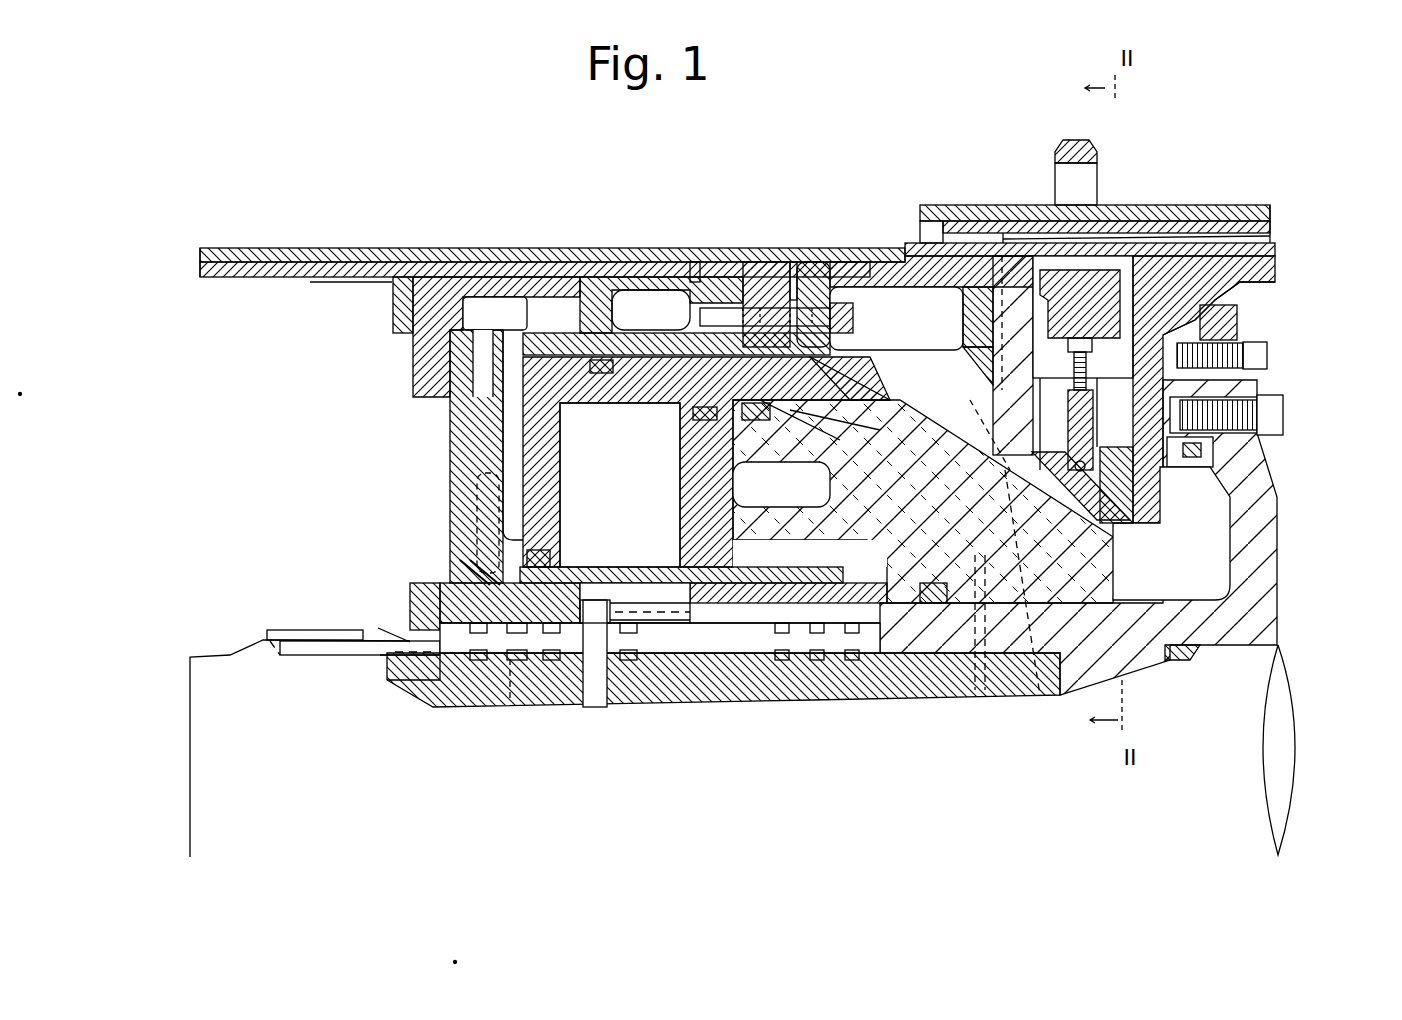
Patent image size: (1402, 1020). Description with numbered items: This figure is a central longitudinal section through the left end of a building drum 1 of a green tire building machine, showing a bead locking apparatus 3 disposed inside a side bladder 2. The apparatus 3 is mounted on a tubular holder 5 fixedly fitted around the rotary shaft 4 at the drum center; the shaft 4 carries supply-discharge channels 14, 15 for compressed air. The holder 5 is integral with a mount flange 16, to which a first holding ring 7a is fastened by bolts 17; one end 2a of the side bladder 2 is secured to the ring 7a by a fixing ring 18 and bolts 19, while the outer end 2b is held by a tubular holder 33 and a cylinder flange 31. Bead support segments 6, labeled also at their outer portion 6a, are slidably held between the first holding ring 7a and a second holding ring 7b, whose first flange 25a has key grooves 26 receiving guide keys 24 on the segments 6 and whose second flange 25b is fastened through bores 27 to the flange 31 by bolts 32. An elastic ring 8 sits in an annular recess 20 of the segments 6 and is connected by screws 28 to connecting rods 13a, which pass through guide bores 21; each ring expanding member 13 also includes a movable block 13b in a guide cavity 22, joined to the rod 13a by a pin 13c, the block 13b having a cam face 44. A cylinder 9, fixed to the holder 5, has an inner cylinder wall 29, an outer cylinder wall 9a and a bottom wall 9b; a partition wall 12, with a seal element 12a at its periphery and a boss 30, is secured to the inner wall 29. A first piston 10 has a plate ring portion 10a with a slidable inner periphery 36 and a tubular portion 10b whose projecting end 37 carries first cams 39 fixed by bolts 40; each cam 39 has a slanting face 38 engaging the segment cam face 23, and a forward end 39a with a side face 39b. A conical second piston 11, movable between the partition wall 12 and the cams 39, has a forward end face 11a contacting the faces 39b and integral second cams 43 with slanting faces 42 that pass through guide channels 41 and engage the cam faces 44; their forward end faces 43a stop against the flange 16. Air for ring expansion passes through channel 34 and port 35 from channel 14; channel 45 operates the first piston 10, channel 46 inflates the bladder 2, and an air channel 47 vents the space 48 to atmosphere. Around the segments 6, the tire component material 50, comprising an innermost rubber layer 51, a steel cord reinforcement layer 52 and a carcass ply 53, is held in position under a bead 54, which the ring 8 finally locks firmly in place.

The building drum 1 is at (1275, 218).
The side bladder 2 is at (615, 262).
The one end of the side bladder 2a is at (1255, 290).
The outer end of the side bladder 2b is at (720, 277).
The bead locking apparatus 3 is at (1232, 593).
The rotary shaft 4 is at (210, 750).
The tubular holder 5 is at (387, 630).
The bead support segments 6 is at (1160, 256).
The outer ring flange 6a is at (925, 215).
The first holding ring 7a is at (1200, 300).
The second holding ring 7b is at (880, 275).
The elastic ring 8 is at (1130, 237).
The cylinder 9 is at (530, 340).
The outer cylinder wall 9a is at (600, 277).
The bottom wall 9b is at (450, 400).
The first piston 10 is at (530, 350).
The plate ring portion 10a is at (480, 435).
The tubular portion 10b is at (640, 340).
The second piston 11 is at (971, 622).
The forward end face 11a is at (975, 695).
The partition wall 12 is at (690, 445).
The piston seal 12a is at (690, 405).
The ring expanding members 13 is at (1196, 534).
The connecting rod 13a is at (1179, 521).
The movable block 13b is at (1200, 516).
The pin 13c is at (1065, 460).
The supply-discharge channel 14 is at (593, 690).
The supply-discharge channel 15 is at (540, 705).
The mount flange 16 is at (1255, 458).
The bolts 17 is at (1283, 417).
The fixing ring 18 is at (1240, 315).
The bolts 19 is at (1267, 355).
The recess 20 is at (1080, 268).
The guide bore 21 is at (1095, 405).
The guide cavity 22 is at (1133, 470).
The cam face 23 is at (990, 440).
The guide key 24 is at (1000, 370).
The first flange 25a is at (965, 305).
The second flange 25b is at (812, 262).
The key grooves 26 is at (985, 325).
The bores 27 is at (855, 305).
The screws 28 is at (1074, 368).
The inner cylinder wall 29 is at (592, 567).
The boss 30 is at (770, 540).
The flange 31 is at (750, 262).
The bolts 32 is at (853, 322).
The tubular holder 33 is at (480, 262).
The supply-discharge channel 34 is at (640, 595).
The port 35 is at (625, 655).
The slidable inner periphery 36 is at (470, 560).
The projecting end 37 is at (700, 316).
The slanting face 38 is at (790, 425).
The first cams 39 is at (890, 395).
The forward end 39a is at (1175, 660).
The side face 39b is at (1038, 604).
The bolts 40 is at (848, 372).
The second cam guide channels 41 is at (830, 440).
The slanting face 42 is at (1113, 572).
The second cams 43 is at (1060, 600).
The forward end faces 43a is at (1190, 655).
The cam face 44 is at (1113, 540).
The supply-discharge channel 45 is at (478, 490).
The supply-discharge channel 46 is at (692, 262).
The air channel 47 is at (690, 540).
The space 48 is at (582, 484).
The tire component material 50 is at (1095, 164).
The innermost rubber layer 51 is at (1136, 184).
The steel cord reinforcement layer 52 is at (990, 221).
The carcass ply 53 is at (950, 205).
The beads 54 is at (1076, 140).